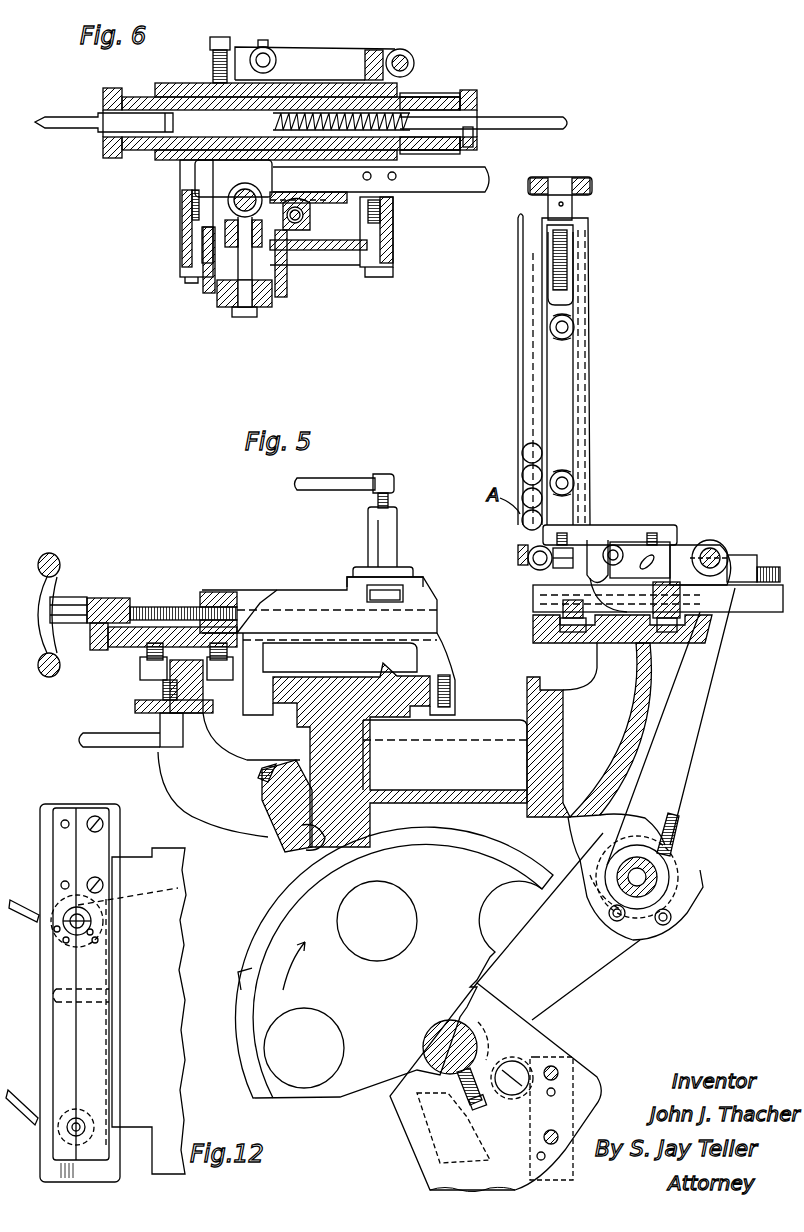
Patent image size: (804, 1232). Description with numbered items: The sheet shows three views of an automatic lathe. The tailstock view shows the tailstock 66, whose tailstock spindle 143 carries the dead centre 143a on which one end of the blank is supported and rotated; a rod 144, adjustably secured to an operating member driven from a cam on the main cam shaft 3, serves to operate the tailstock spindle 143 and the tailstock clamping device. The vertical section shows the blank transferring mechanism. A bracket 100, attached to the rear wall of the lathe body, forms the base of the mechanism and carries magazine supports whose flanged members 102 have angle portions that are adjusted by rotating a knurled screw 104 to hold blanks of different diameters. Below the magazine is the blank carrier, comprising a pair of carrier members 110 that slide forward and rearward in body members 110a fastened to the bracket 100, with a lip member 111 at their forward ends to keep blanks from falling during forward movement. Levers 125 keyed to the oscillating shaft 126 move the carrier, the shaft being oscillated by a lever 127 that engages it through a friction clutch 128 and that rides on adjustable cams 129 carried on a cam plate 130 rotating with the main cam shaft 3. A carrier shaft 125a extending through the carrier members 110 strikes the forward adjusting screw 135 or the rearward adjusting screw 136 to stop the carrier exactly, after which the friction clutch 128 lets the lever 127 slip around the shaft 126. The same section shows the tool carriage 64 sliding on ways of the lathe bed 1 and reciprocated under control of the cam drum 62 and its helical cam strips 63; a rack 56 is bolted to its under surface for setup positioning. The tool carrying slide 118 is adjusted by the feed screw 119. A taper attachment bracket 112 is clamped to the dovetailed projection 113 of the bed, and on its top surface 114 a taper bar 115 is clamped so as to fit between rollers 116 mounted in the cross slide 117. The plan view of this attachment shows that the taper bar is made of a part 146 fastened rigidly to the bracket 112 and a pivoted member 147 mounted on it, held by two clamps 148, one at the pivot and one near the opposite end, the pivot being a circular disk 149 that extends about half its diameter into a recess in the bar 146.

In FIG. 6, the dead centre 143a is at (53, 123).
In FIG. 6, the tailstock spindle 143 is at (405, 95).
In FIG. 6, the tailstock 66 is at (175, 158).
In FIG. 6, the rod 144 is at (445, 192).
In FIG. 5, the knurled screw 104 is at (590, 185).
In FIG. 5, the flanged members 102 is at (541, 338).
In FIG. 5, the adjusting screw 135 is at (527, 540).
In FIG. 5, the lip member 111 is at (528, 566).
In FIG. 5, the carrier members 110 is at (680, 545).
In FIG. 5, the carrier shaft 125a is at (718, 545).
In FIG. 5, the adjusting screw 136 is at (760, 570).
In FIG. 5, the body members 110a is at (757, 604).
In FIG. 5, the lathe bed 1 is at (523, 703).
In FIG. 5, the bracket 100 is at (640, 743).
In FIG. 5, the tool carrying slide 118 is at (320, 600).
In FIG. 5, the tool carriage 64 is at (440, 658).
In FIG. 5, the rack 56 is at (285, 724).
In FIG. 5, the cross slide 117 is at (160, 640).
In FIG. 5, the feed screw 119 is at (185, 612).
In FIG. 5, the rollers 116 is at (142, 671).
In FIG. 5, the taper bar 115 is at (160, 688).
In FIG. 12, the taper bar 115 is at (55, 844).
In FIG. 5, the top surface 114 is at (140, 711).
In FIG. 5, the bracket 112 is at (200, 817).
In FIG. 12, the bracket 112 is at (141, 943).
In FIG. 5, the dovetailed projection 113 is at (272, 833).
In FIG. 5, the cam drum 62 is at (262, 1007).
In FIG. 5, the helical cam strips 63 is at (250, 950).
In FIG. 5, the main cam shaft 3 is at (428, 1032).
In FIG. 5, the levers 125 is at (688, 773).
In FIG. 5, the oscillating shaft 126 is at (678, 871).
In FIG. 5, the friction clutch 128 is at (690, 906).
In FIG. 5, the lever 127 is at (580, 1016).
In FIG. 5, the cam plate 130 is at (585, 1068).
In FIG. 5, the adjustable cams 129 is at (570, 1102).
In FIG. 12, the taper bar part 146 is at (97, 844).
In FIG. 12, the pivoted member 147 is at (90, 1046).
In FIG. 12, the clamps 148 is at (27, 896).
In FIG. 12, the circular disk 149 is at (143, 899).